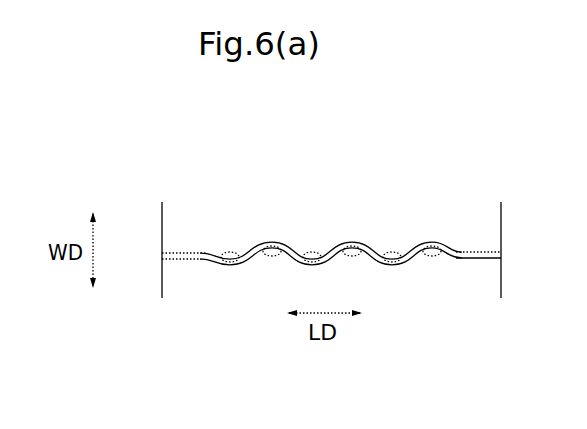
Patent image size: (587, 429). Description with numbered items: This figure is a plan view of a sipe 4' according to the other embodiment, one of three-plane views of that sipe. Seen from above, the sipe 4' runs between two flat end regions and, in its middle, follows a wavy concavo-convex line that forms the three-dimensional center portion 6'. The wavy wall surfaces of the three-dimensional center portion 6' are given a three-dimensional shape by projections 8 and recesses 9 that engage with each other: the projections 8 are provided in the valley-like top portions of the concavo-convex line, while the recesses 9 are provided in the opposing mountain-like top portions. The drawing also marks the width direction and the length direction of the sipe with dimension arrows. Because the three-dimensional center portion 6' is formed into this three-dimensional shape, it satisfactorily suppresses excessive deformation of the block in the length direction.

The sipe 4' is at (331, 216).
The 3D center portion 6' is at (389, 216).
The projections 8 is at (358, 246).
The recesses 9 is at (237, 251).